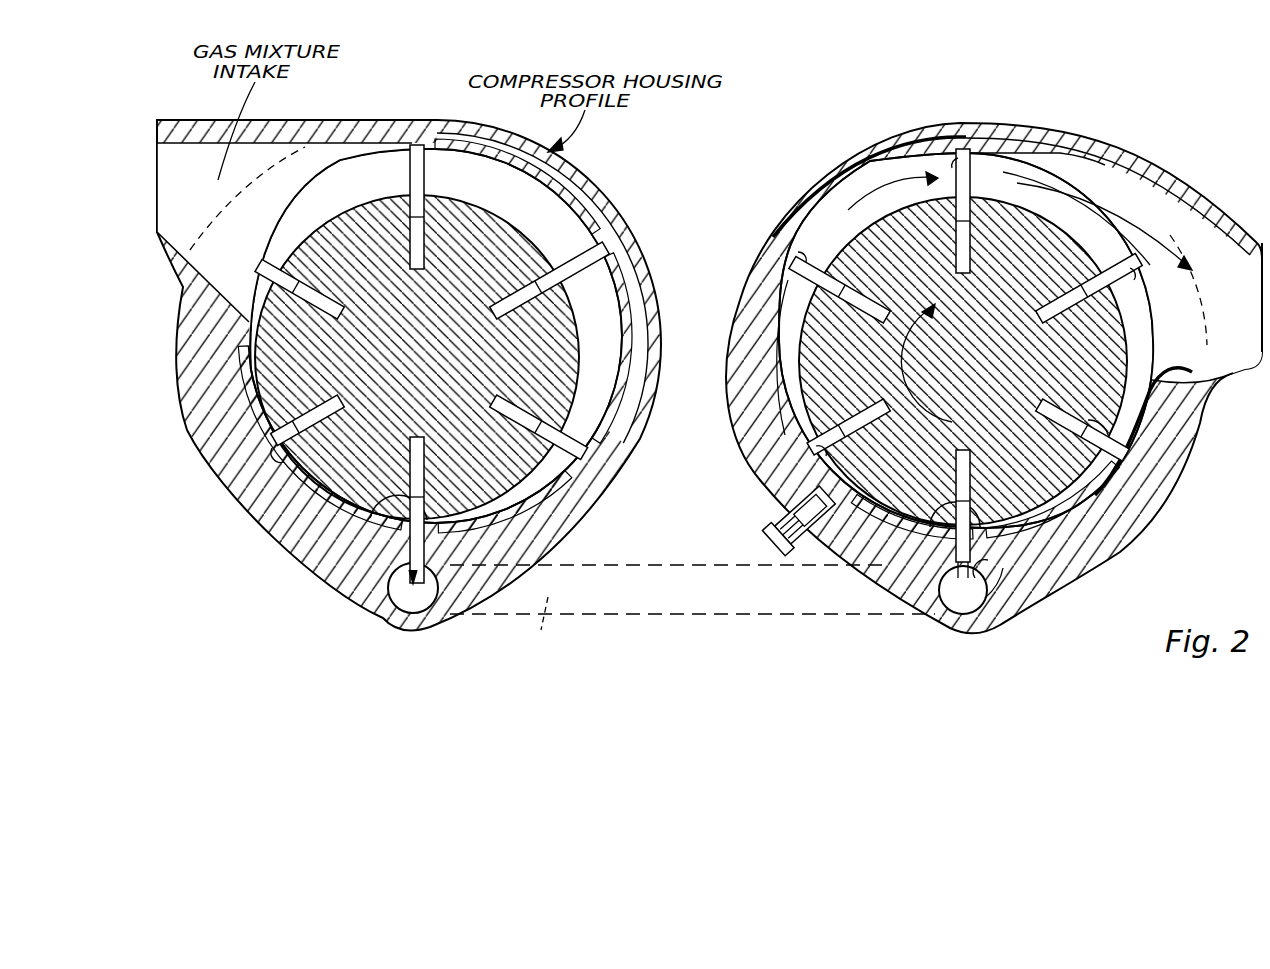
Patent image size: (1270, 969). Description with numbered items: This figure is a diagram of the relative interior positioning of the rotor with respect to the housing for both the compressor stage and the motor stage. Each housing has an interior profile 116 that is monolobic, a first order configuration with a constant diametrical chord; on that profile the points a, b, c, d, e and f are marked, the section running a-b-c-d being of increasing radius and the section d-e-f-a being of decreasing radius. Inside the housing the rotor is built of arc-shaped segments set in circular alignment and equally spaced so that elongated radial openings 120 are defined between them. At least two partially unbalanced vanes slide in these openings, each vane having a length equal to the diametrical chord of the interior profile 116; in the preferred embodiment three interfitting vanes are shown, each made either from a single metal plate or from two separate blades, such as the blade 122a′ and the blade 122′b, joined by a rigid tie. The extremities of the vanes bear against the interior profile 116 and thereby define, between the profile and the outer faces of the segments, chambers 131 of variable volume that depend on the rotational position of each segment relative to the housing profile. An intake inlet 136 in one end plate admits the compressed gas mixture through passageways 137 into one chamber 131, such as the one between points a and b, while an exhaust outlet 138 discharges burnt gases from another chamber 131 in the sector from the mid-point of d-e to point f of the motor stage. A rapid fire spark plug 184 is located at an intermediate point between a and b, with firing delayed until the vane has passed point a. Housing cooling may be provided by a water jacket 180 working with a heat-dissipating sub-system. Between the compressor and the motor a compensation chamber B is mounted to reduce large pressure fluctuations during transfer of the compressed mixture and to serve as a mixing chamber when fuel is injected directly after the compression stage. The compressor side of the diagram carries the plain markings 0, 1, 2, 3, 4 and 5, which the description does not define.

The vane (lower left) of left view 0 is at (278, 458).
The vane 1 is at (270, 268).
The vane 2 is at (412, 152).
The vane 3 is at (598, 248).
The vane 4 is at (576, 432).
The vane 5 is at (348, 572).
The compensation chamber B is at (528, 625).
The interior profile 116 is at (822, 213).
The elongated radial openings 120 is at (800, 300).
The blade 122′b is at (968, 148).
The blade 122a′ is at (950, 562).
The chambers 131 is at (925, 150).
The intake inlet 136 is at (965, 612).
The passageways 137 is at (998, 600).
The exhaust outlet 138 is at (1238, 250).
The water jacket 180 is at (838, 192).
The rapid fire spark plug 184 is at (776, 520).
The profile point a is at (1000, 545).
The profile point b is at (820, 457).
The profile point c is at (800, 260).
The profile point d is at (975, 165).
The profile point e is at (1130, 272).
The profile point f is at (1110, 412).